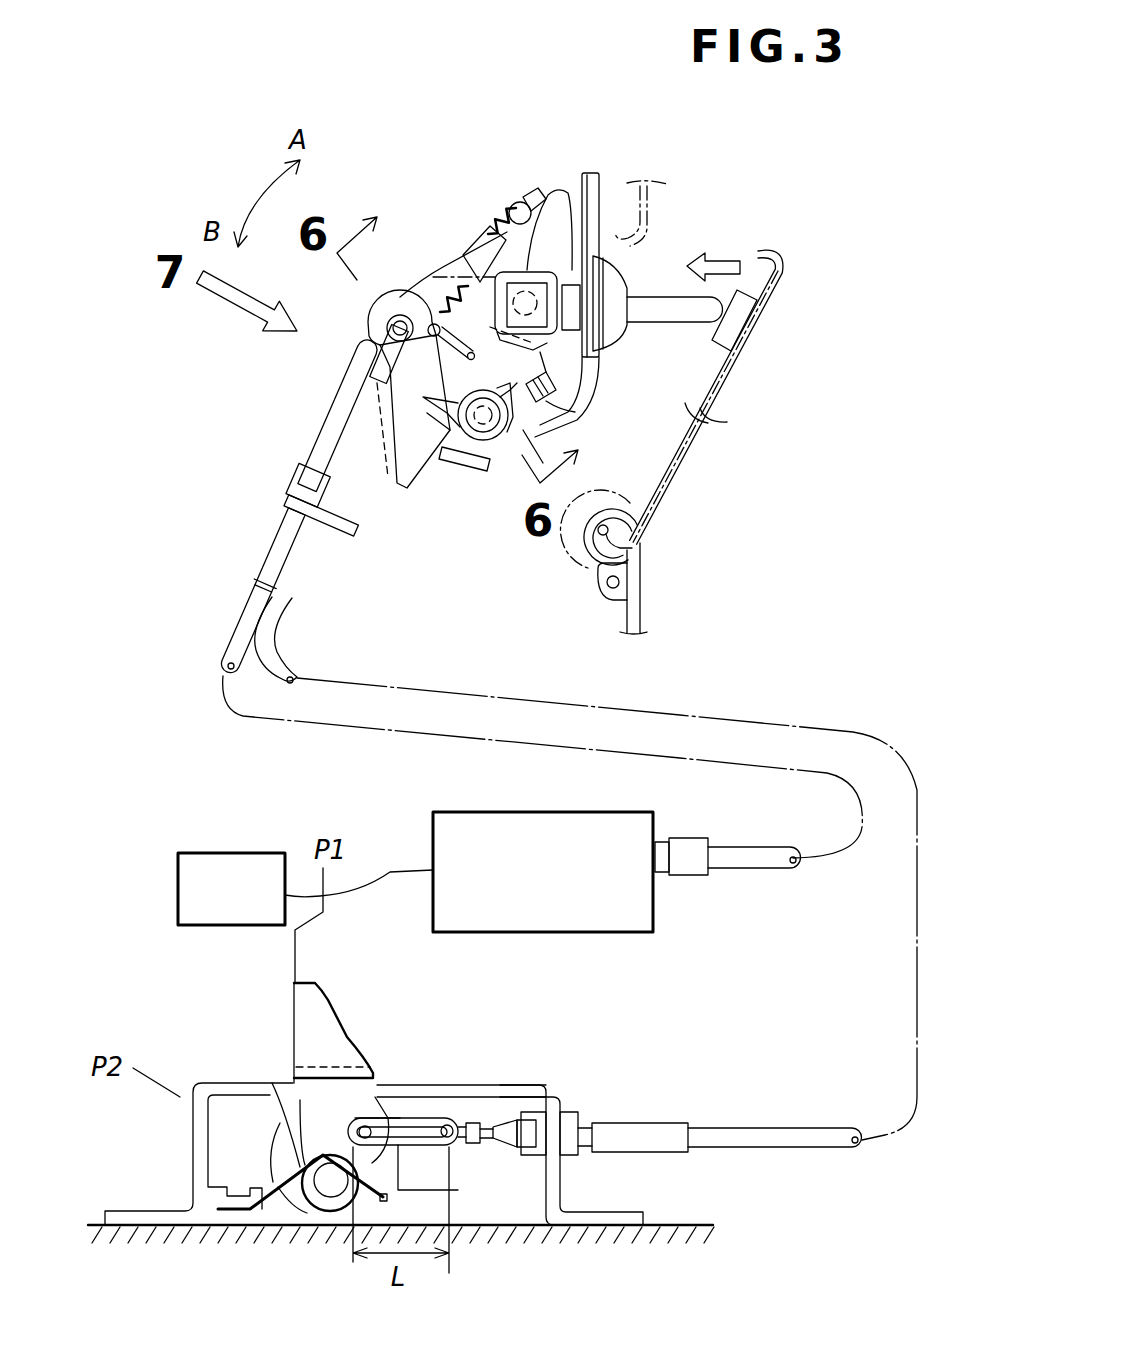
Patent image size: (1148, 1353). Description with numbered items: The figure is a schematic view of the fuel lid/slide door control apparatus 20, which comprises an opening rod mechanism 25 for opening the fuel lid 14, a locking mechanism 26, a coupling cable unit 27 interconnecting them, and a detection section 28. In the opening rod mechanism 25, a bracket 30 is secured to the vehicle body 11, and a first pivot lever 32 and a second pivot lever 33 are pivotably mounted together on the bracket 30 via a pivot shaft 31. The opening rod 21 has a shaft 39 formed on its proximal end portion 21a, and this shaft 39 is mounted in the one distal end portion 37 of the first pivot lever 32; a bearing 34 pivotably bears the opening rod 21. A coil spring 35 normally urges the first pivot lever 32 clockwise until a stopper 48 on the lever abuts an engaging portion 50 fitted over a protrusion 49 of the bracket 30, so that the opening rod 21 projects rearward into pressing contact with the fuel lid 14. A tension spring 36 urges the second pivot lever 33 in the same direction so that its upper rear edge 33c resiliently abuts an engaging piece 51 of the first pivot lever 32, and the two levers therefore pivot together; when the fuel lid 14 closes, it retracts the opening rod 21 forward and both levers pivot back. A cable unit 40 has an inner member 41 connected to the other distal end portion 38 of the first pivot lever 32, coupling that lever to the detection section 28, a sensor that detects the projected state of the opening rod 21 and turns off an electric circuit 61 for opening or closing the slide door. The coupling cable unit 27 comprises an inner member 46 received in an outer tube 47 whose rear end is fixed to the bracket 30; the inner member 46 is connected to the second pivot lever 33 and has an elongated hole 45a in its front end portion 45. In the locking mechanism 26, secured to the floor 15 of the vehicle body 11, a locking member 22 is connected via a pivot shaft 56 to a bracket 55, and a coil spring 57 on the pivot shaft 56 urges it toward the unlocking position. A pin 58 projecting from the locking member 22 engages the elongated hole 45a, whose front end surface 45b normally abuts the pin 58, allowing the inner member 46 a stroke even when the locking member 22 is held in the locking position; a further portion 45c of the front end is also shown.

The vehicle body 11 is at (643, 592).
The fuel lid 14 is at (724, 385).
The floor 15 is at (682, 1226).
The fuel lid/slide door control apparatus 20 is at (420, 99).
The opening rod 21 is at (662, 304).
The proximal end portion 21a is at (526, 268).
The locking member 22 is at (330, 1007).
The opening rod mechanism 25 is at (566, 179).
The locking mechanism 26 is at (191, 1066).
The coupling cable unit 27 is at (772, 1103).
The detection section 28 is at (437, 822).
The bracket 30 is at (322, 408).
The pivot shaft 31 is at (485, 437).
The first pivot lever 32 is at (351, 294).
The second pivot lever 33 is at (423, 290).
The upper rear edge 33c is at (493, 437).
The bearing 34 is at (613, 268).
The coil spring 35 is at (450, 450).
The tension spring 36 is at (500, 210).
The one distal end portion 37 is at (463, 273).
The other distal end portion 38 is at (368, 325).
The shaft 39 is at (600, 180).
The cable unit 40 is at (235, 627).
The inner member 41 is at (340, 442).
The front end portion 45 is at (480, 1120).
The elongated hole 45a is at (427, 1130).
The front end surface 45b is at (365, 1127).
The ferrule 45c is at (475, 1120).
The inner member 46 is at (493, 1127).
The outer tube 47 is at (825, 1130).
The stopper 48 is at (548, 410).
The protrusion 49 is at (553, 390).
The engaging portion 50 is at (567, 346).
The engaging piece 51 is at (477, 280).
The bracket 55 is at (198, 1130).
The pivot shaft 56 is at (320, 1180).
The coil spring 57 is at (323, 1177).
The pin 58 is at (373, 1117).
The electric circuit 61 is at (210, 853).